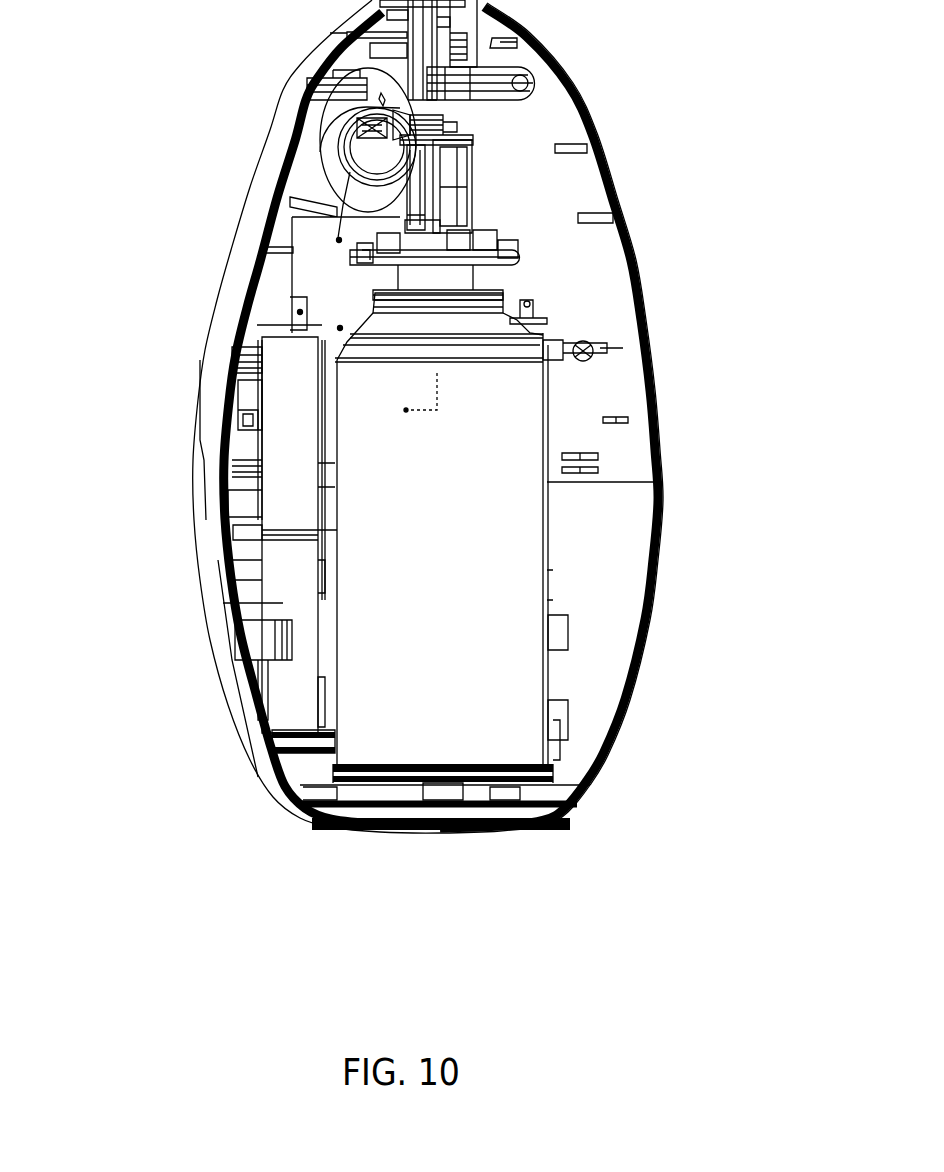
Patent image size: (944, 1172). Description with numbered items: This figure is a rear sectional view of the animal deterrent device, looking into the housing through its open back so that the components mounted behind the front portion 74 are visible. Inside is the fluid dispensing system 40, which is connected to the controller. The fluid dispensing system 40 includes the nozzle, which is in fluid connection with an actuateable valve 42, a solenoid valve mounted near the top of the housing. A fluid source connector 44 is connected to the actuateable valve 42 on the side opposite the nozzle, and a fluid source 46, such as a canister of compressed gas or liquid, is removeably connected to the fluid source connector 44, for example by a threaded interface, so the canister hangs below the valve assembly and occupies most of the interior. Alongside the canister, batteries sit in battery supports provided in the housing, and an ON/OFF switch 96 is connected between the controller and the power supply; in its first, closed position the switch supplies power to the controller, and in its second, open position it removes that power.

The front portion 74 is at (281, 90).
The fluid dispensing system 40 is at (531, 166).
The actuateable valve 42 is at (447, 203).
The fluid source connector 44 is at (487, 283).
The fluid source 46 is at (530, 598).
The ON/OFF switch 96 is at (217, 418).